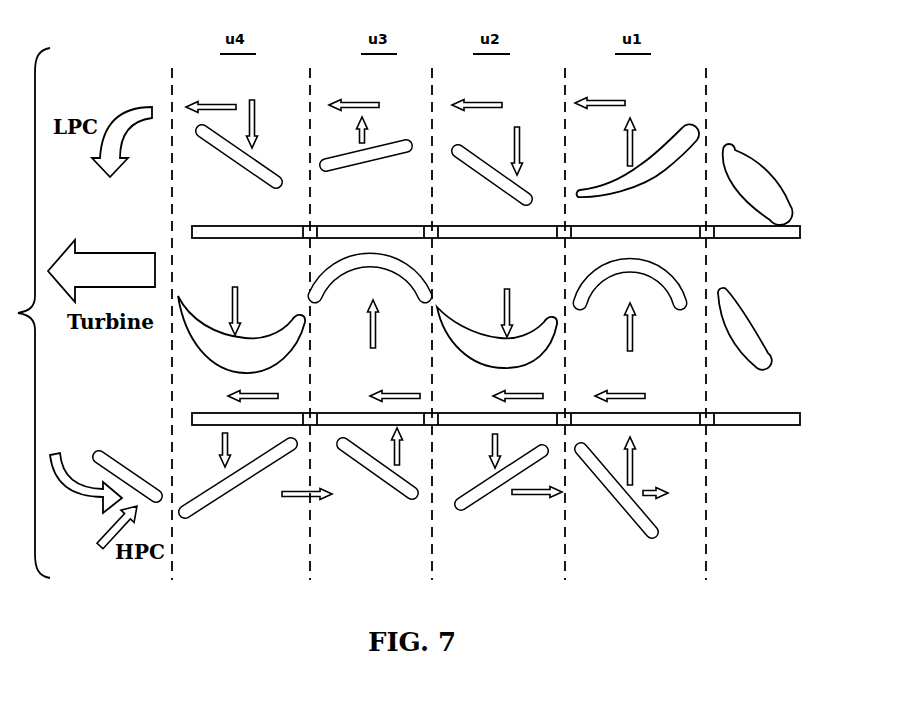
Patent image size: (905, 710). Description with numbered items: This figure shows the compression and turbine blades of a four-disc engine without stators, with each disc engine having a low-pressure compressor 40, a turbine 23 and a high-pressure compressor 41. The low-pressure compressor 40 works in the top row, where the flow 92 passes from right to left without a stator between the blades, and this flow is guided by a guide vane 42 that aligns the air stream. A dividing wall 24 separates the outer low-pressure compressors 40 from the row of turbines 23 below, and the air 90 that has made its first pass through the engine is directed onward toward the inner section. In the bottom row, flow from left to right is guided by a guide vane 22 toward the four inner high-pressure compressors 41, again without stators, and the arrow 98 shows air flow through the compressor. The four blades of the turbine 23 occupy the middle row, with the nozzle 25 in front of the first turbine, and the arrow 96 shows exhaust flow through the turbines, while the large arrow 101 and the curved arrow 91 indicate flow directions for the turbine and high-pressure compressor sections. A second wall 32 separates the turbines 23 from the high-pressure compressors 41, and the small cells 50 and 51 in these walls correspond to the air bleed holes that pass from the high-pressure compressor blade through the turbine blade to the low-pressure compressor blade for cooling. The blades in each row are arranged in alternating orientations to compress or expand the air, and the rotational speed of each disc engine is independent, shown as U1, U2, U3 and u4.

The guide vane 22 is at (125, 464).
The turbine 23 is at (637, 281).
The dividing wall 24 is at (298, 226).
The nozzle 25 is at (747, 327).
The second shaft / spool 32 is at (768, 412).
The low-pressure compressor 40 is at (692, 131).
The high-pressure compressor 41 is at (392, 483).
The guide vane 42 is at (757, 178).
The air bleed hole 50 is at (707, 425).
The air bleed hole 51 is at (439, 227).
The air 90 is at (123, 113).
The high pressure compressor flow direction arrow 91 is at (72, 493).
The flow 92 is at (356, 103).
The exhaust flow arrow 96 is at (632, 390).
The air flow arrow 98 is at (298, 500).
The turbine flow direction arrow 101 is at (101, 271).
The rotational speed of fourth disc engine u4 is at (240, 310).
The rotational speed of third disc engine U3 is at (377, 335).
The rotational speed of second disc engine U2 is at (513, 302).
The rotational speed of first disc engine U1 is at (635, 343).